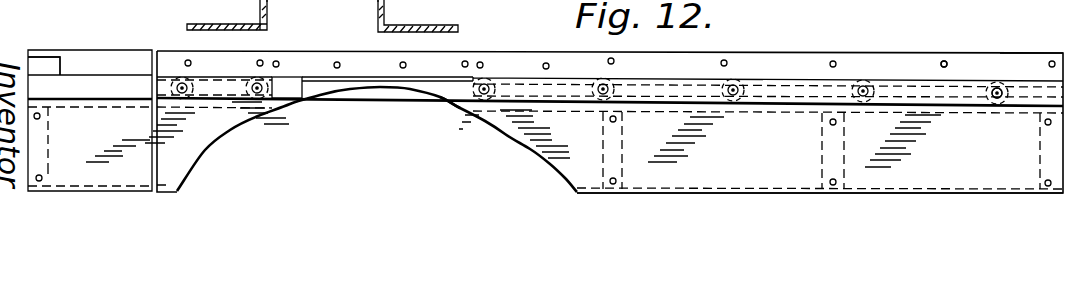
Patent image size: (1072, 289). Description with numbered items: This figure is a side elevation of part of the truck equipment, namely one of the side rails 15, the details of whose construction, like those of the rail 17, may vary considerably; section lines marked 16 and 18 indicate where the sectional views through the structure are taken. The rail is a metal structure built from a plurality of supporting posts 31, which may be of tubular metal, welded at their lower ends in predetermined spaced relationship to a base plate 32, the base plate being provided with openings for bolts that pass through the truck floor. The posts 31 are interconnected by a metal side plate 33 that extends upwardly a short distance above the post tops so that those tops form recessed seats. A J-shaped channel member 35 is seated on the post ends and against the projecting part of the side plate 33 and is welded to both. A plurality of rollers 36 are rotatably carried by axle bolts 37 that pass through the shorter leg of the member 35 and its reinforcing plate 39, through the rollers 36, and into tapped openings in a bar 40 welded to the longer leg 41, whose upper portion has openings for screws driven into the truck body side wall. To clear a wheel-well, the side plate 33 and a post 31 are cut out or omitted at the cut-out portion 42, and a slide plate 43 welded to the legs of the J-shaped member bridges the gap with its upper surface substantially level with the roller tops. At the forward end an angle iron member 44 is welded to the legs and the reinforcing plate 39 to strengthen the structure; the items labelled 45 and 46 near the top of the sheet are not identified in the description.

The side rail 15 is at (683, 52).
The section line 16 is at (350, 48).
The rail 17 is at (78, 38).
The section line 18 is at (912, 50).
The supporting post 31 is at (50, 173).
The base plate 32 is at (772, 188).
The side plate 33 is at (553, 170).
The J-shaped channel member 35 is at (788, 112).
The roller 36 is at (608, 80).
The axle bolt 37 is at (997, 100).
The reinforcing plate 39 is at (218, 100).
The bar 40 is at (923, 85).
The longer leg 41 is at (1007, 62).
The cut-out portion 42 is at (462, 112).
The slide plate 43 is at (300, 82).
The angle iron member 44 is at (60, 70).
The channel member 45 is at (322, 4).
The angle member 46 is at (213, 22).